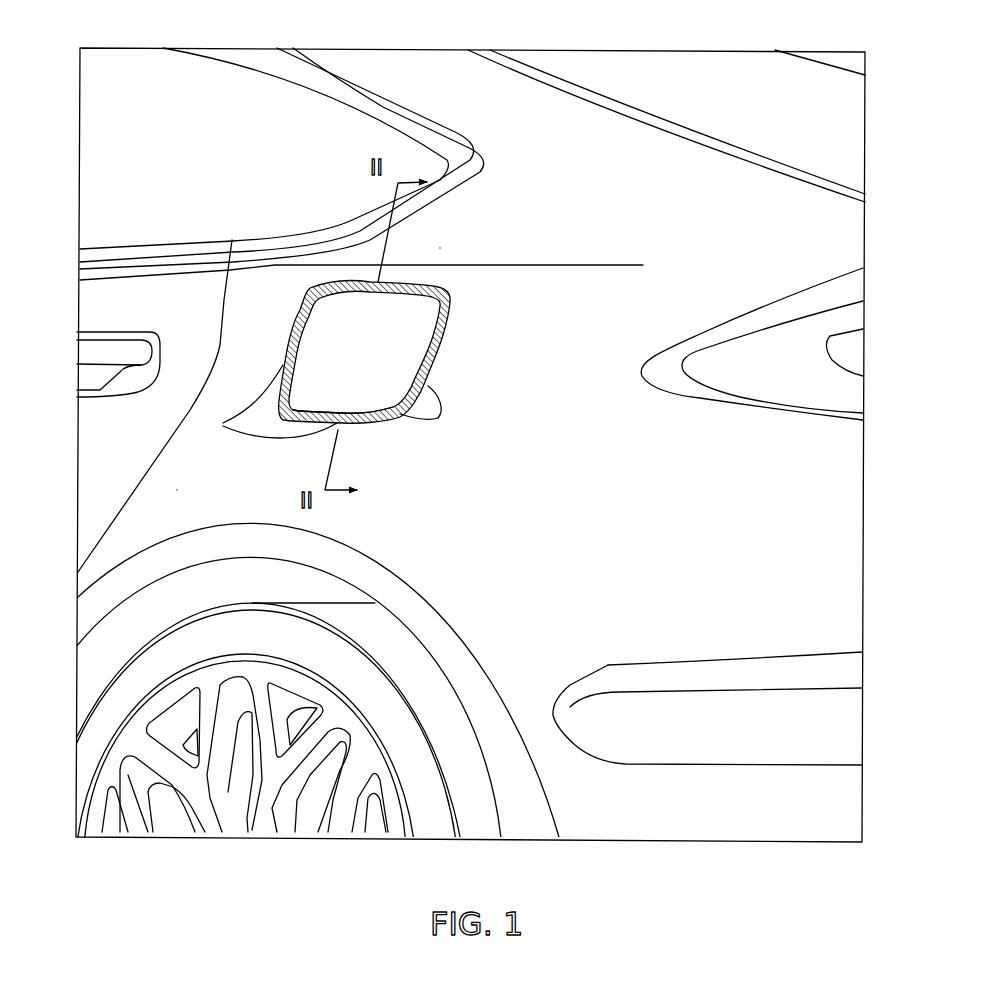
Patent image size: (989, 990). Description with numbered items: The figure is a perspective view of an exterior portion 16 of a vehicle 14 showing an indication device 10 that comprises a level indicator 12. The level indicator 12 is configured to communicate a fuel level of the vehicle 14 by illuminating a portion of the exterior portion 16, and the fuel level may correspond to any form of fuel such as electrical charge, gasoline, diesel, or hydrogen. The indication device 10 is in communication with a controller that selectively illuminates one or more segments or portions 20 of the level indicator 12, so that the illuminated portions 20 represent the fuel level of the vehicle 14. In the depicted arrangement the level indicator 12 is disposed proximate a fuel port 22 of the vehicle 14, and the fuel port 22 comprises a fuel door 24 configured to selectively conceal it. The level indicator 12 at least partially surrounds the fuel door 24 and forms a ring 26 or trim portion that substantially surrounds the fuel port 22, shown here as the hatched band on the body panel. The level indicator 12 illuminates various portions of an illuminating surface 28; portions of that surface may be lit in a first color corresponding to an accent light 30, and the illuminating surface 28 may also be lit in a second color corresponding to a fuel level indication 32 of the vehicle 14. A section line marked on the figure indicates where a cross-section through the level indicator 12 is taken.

The indication device 10 is at (471, 383).
The vehicle 14 is at (530, 143).
The level indicator 12 is at (450, 319).
The exterior portion 16 is at (177, 490).
The portions 20 is at (370, 285).
The fuel port 22 is at (460, 282).
The fuel door 24 is at (384, 385).
The ring 26 is at (426, 352).
The illuminating surface 28 is at (440, 366).
The accent light 30 is at (438, 248).
The fuel level indication 32 is at (322, 287).